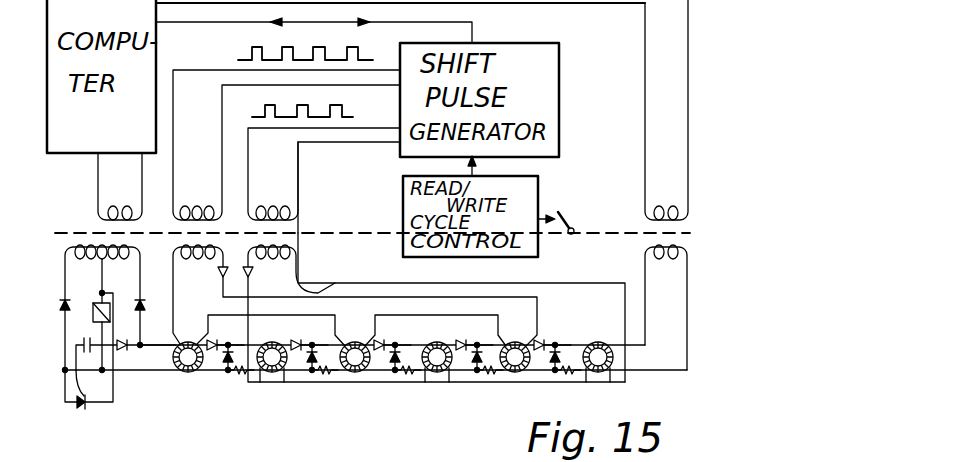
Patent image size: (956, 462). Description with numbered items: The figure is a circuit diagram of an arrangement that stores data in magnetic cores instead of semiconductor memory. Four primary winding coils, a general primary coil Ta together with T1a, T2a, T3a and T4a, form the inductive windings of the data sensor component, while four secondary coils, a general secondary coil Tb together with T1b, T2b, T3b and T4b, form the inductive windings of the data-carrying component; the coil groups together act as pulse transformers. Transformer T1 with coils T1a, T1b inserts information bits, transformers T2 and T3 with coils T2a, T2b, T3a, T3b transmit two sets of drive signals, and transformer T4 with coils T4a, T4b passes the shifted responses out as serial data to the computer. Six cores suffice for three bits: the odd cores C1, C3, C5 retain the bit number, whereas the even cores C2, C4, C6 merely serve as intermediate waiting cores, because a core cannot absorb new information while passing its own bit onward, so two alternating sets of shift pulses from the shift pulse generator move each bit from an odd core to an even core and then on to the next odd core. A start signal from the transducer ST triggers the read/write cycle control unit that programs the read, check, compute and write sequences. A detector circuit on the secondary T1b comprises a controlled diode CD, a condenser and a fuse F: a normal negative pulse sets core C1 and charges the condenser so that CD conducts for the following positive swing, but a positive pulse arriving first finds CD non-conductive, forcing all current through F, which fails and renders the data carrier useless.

The odd memory core C1 is at (211, 378).
The even intermediate core C2 is at (294, 378).
The odd memory core C3 is at (377, 378).
The even intermediate core C4 is at (459, 378).
The odd memory core C5 is at (539, 378).
The even intermediate core C6 is at (600, 379).
The primary coil of transformer T1 T1a is at (130, 184).
The primary coil of transformer T2 T2a is at (206, 184).
The primary coil of transformer T3 T3a is at (281, 184).
The primary coil of transformer T4 T4a is at (677, 184).
The primary winding coil Ta is at (330, 201).
The secondary coil of transformer T1 T1b is at (134, 286).
The secondary coil of transformer T2 T2b is at (204, 294).
The secondary coil of transformer T3 T3b is at (371, 257).
The secondary coil of transformer T4 T4b is at (677, 286).
The secondary winding coil Tb is at (330, 261).
The fuse F is at (91, 336).
The controlled diode CD is at (89, 405).
The transducer ST is at (574, 219).